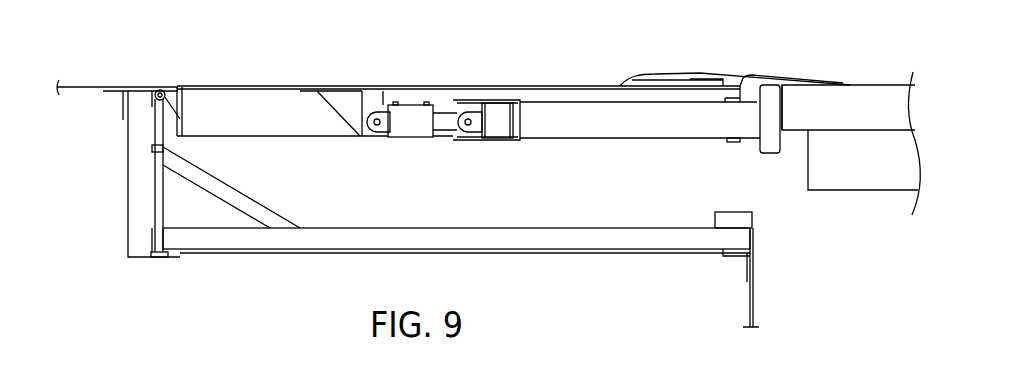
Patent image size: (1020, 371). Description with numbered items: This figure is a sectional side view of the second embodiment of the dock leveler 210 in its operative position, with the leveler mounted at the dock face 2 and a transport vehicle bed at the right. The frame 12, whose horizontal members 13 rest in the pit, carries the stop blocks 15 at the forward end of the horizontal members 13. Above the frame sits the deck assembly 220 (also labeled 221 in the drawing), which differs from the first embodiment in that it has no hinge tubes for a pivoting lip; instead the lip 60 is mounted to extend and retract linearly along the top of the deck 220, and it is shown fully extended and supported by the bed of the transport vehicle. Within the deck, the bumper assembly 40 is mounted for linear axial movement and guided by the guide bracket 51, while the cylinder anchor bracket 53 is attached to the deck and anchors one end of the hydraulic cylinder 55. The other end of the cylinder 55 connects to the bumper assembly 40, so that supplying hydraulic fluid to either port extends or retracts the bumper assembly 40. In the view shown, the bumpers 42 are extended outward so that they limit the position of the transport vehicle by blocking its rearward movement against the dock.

The dock face 2 is at (752, 306).
The frame 12 is at (456, 219).
The horizontal members 13 is at (420, 208).
The stop blocks 15 is at (753, 222).
The bumper assembly 40 is at (574, 138).
The bumper segments 42 is at (770, 155).
The guide bracket 51 is at (507, 142).
The cylinder anchor bracket 53 is at (383, 100).
The hydraulic cylinder 55 is at (405, 137).
The lip 60 is at (737, 73).
The dock leveler 210 is at (467, 87).
The deck assembly 220 is at (467, 87).
The upper beam plate 221 is at (492, 61).